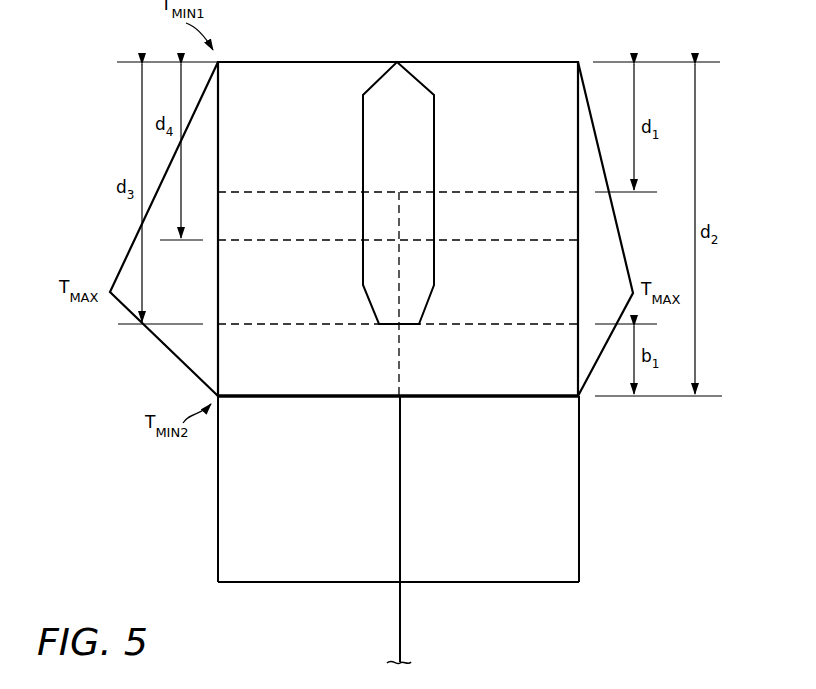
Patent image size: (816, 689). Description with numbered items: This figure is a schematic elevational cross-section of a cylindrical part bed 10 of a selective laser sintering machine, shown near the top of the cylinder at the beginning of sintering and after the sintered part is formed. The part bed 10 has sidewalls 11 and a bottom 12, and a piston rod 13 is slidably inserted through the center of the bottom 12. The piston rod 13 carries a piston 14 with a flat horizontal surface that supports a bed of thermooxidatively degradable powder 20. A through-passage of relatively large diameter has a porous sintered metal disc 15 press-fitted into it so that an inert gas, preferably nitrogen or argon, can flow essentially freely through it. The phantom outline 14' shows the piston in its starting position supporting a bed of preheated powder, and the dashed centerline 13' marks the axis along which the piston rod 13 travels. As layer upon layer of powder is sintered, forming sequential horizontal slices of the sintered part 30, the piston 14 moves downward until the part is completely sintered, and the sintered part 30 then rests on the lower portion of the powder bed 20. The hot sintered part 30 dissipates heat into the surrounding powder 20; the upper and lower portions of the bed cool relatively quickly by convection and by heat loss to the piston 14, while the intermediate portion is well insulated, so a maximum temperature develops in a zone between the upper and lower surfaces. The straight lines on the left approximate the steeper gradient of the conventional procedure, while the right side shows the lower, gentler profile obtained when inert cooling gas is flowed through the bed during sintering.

The cylindrical part bed 10 is at (159, 361).
The sidewalls 11 is at (218, 495).
The bottom 12 is at (503, 584).
The piston rod 13 is at (419, 530).
The center axis 13' is at (424, 294).
The piston 14 is at (309, 420).
The phantom outline of piston 14' is at (398, 169).
The porous sintered metal disc 15 is at (549, 398).
The bed of thermooxidatively degradable powder 20 is at (398, 229).
The sintered part 30 is at (434, 135).